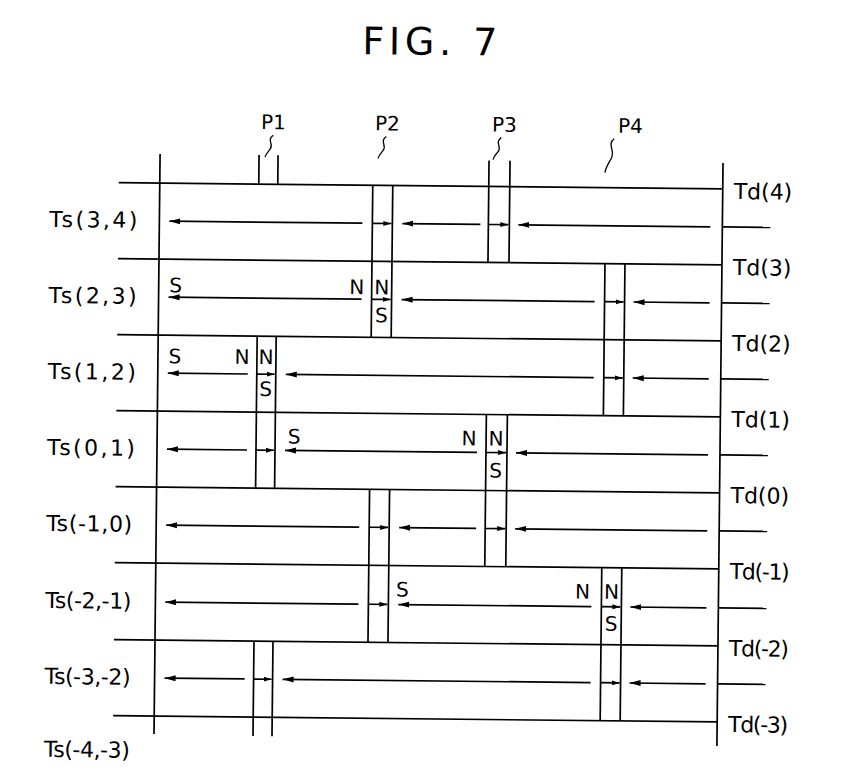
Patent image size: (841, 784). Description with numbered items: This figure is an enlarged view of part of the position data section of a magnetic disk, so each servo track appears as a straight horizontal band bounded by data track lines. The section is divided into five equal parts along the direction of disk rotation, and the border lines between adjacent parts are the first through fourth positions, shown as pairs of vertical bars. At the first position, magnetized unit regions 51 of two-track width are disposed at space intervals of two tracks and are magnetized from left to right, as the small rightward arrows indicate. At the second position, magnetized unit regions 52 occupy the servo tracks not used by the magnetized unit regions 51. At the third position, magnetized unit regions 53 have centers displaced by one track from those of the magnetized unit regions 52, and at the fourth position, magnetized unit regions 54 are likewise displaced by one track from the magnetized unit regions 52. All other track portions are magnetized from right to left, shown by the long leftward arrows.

The magnetized unit regions 51 is at (272, 172).
The magnetized unit regions 52 is at (391, 243).
The magnetized unit regions 53 is at (511, 214).
The magnetized unit regions 54 is at (626, 284).